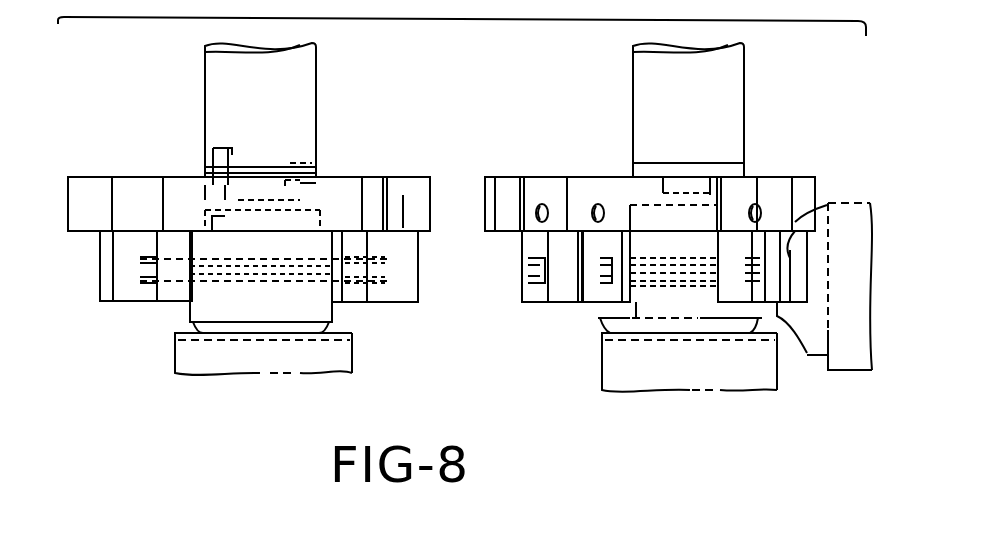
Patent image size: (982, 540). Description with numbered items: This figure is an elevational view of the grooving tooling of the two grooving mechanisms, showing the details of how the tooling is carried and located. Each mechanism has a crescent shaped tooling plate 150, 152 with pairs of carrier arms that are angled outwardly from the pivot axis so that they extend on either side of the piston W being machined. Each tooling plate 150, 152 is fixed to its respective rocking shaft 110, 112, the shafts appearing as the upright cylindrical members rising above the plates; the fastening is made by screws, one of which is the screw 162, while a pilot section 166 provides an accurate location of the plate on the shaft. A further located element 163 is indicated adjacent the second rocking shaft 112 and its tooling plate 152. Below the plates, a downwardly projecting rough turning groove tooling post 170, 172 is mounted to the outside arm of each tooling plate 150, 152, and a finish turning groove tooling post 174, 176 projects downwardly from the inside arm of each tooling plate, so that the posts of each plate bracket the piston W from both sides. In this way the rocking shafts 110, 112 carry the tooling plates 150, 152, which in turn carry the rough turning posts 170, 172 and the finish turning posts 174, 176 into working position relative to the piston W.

The rocking shaft 110 is at (203, 78).
The rocking shaft 112 is at (630, 75).
The tooling plate 150 is at (98, 158).
The tooling plate 152 is at (548, 147).
The screw 162 is at (215, 203).
The pilot section 166 is at (316, 177).
The bracket 163 is at (712, 178).
The rough turning groove tooling post 170 is at (100, 288).
The finish turning groove tooling post 174 is at (420, 290).
The finish turning groove tooling post 176 is at (522, 288).
The rough turning groove tooling post 172 is at (710, 287).
The piston W is at (177, 350).